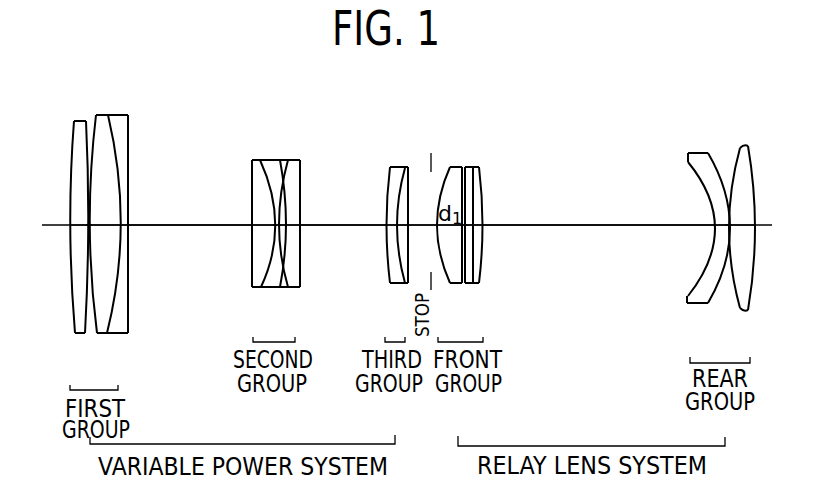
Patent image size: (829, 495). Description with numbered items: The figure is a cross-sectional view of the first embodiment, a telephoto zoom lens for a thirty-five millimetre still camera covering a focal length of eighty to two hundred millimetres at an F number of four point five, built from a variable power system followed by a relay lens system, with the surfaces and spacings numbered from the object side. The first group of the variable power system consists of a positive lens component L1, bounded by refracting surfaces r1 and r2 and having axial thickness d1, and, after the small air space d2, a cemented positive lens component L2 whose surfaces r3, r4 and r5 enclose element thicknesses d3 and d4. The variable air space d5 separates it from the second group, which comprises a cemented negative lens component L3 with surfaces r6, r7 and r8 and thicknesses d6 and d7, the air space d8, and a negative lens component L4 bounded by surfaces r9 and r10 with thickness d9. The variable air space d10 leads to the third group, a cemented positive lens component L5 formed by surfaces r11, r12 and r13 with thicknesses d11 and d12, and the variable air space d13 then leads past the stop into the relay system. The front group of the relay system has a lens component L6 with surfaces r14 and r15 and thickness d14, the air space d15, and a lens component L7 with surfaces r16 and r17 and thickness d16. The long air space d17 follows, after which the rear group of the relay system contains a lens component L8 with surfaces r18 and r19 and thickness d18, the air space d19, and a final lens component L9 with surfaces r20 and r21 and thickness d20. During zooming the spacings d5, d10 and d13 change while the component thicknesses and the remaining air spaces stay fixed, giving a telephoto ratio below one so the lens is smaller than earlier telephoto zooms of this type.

The positive lens component L1 is at (69, 222).
The cemented positive lens component L2 is at (118, 222).
The cemented negative lens component L3 is at (247, 222).
The negative lens component L4 is at (292, 222).
The cemented positive lens component L5 is at (398, 222).
The lens component L6 is at (456, 223).
The lens component L7 is at (497, 223).
The lens component L8 is at (698, 233).
The lens component L9 is at (742, 233).
The refracting surface r1 is at (73, 121).
The refracting surface r2 is at (86, 121).
The refracting surface r3 is at (96, 116).
The refracting surface r4 is at (110, 115).
The refracting surface r5 is at (129, 117).
The refracting surface r6 is at (251, 161).
The refracting surface r7 is at (260, 161).
The refracting surface r8 is at (280, 161).
The refracting surface r9 is at (286, 161).
The refracting surface r10 is at (301, 161).
The refracting surface r11 is at (390, 164).
The refracting surface r12 is at (404, 165).
The refracting surface r13 is at (409, 165).
The refracting surface r14 is at (452, 165).
The refracting surface r15 is at (458, 165).
The refracting surface r16 is at (470, 165).
The refracting surface r17 is at (478, 165).
The refracting surface r18 is at (687, 165).
The refracting surface r19 is at (709, 153).
The refracting surface r20 is at (738, 153).
The refracting surface r21 is at (750, 146).
The axial thickness d1 is at (83, 213).
The air space d2 is at (88, 222).
The axial thickness d3 is at (106, 213).
The axial thickness d4 is at (120, 222).
The air space d5 is at (173, 213).
The axial thickness d6 is at (262, 218).
The axial thickness d7 is at (273, 228).
The air space d8 is at (279, 217).
The axial thickness d9 is at (285, 228).
The air space d10 is at (331, 208).
The axial thickness d11 is at (404, 214).
The axial thickness d12 is at (409, 207).
The air space d13 is at (427, 214).
The axial thickness d14 is at (447, 233).
The air space d15 is at (463, 224).
The axial thickness d16 is at (470, 236).
The air space d17 is at (608, 222).
The axial thickness d18 is at (723, 226).
The air space d19 is at (722, 233).
The axial thickness d20 is at (742, 217).